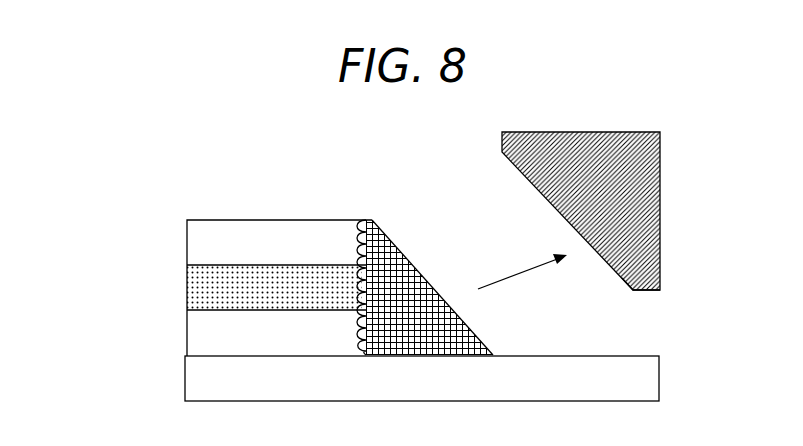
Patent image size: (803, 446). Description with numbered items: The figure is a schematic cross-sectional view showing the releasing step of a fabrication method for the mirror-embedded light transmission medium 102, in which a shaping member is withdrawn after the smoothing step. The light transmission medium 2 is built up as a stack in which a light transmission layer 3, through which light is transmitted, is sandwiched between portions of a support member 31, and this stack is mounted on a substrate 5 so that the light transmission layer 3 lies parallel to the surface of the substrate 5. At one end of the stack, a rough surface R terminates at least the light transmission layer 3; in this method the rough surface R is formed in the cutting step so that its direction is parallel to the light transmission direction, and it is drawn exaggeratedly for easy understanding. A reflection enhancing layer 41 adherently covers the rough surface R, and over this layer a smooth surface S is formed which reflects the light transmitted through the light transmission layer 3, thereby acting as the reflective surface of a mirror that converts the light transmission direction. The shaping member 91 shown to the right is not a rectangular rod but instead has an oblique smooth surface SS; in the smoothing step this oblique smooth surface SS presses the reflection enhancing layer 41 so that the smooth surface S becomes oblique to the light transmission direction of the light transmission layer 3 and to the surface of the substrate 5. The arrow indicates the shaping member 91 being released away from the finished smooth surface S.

The mirror-embedded light transmission medium 102 is at (165, 174).
The light transmission medium 2 is at (124, 220).
The support member 31 is at (193, 242).
The light transmission layer 3 is at (193, 286).
The substrate 5 is at (192, 377).
The reflection enhancing layer 41 is at (417, 272).
The rough surface R is at (360, 250).
The smooth surface S is at (417, 244).
The shaping member 91 is at (660, 183).
The oblique smooth surface SS is at (628, 284).